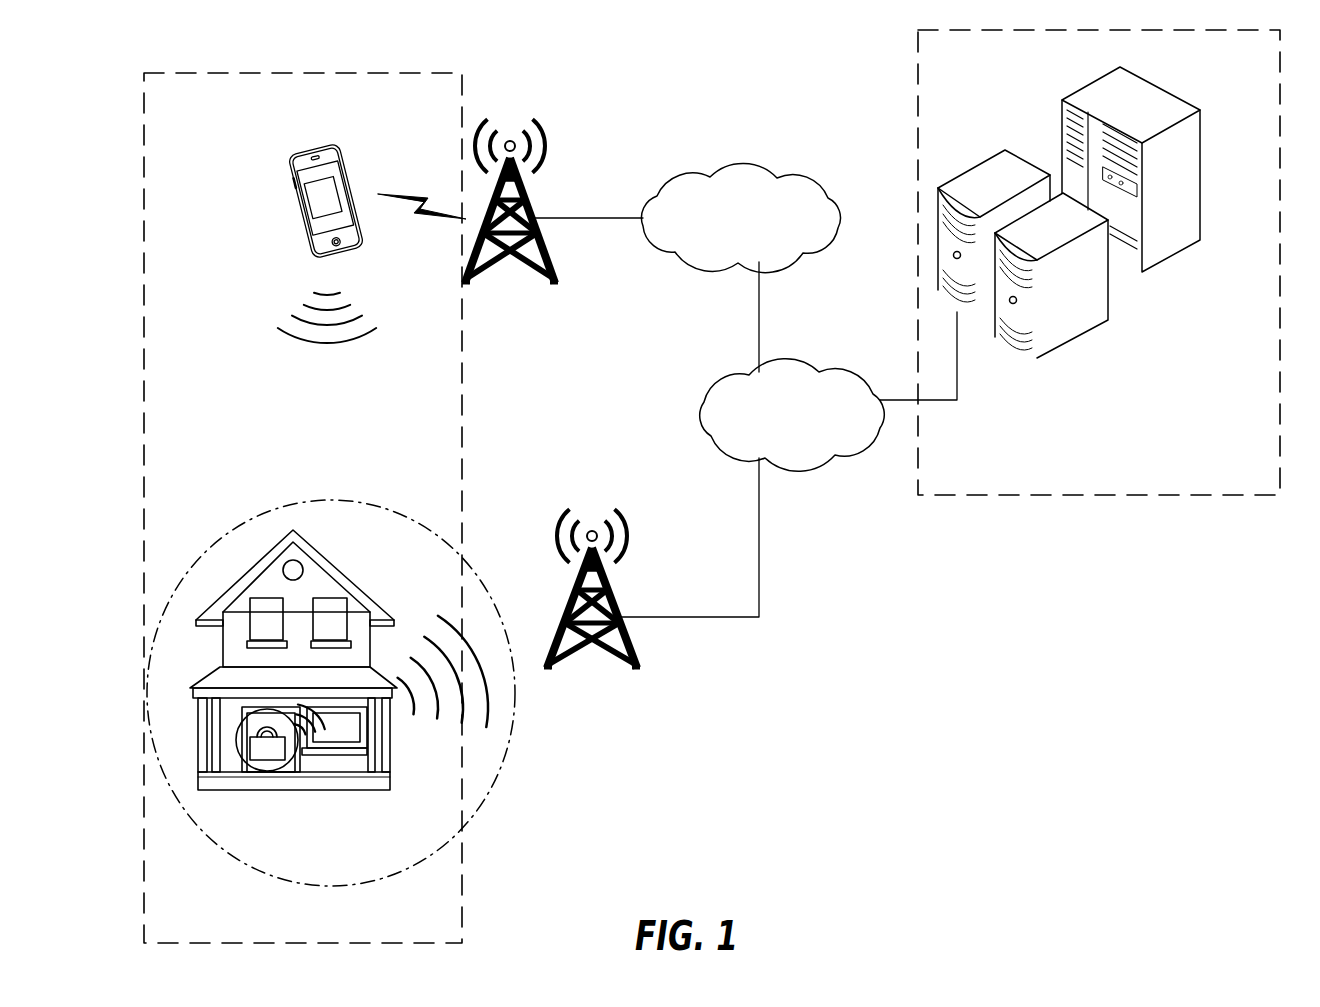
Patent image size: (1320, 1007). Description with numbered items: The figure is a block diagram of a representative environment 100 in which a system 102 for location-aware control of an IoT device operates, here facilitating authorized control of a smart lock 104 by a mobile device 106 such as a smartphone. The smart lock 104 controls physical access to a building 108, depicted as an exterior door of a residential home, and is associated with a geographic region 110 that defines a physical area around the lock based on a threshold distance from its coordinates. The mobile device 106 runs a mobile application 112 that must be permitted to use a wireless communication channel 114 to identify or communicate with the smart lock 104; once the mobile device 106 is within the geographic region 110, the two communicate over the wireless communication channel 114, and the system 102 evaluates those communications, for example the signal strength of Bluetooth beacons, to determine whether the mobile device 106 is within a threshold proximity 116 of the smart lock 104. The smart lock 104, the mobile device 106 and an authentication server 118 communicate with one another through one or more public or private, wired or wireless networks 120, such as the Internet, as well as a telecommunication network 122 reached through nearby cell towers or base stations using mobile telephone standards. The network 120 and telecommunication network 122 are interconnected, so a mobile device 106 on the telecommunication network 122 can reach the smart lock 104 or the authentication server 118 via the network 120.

The environment 100 is at (595, 94).
The system 102 is at (303, 508).
The smart lock 104 is at (257, 748).
The mobile device 106 is at (290, 152).
The building 108 is at (242, 576).
The geographic region 110 is at (358, 502).
The mobile application 112 is at (340, 182).
The wireless communication channel 114 is at (285, 334).
The threshold proximity 116 is at (293, 772).
The authentication server 118 is at (1160, 88).
The network 120 is at (855, 358).
The telecommunication network 122 is at (815, 164).